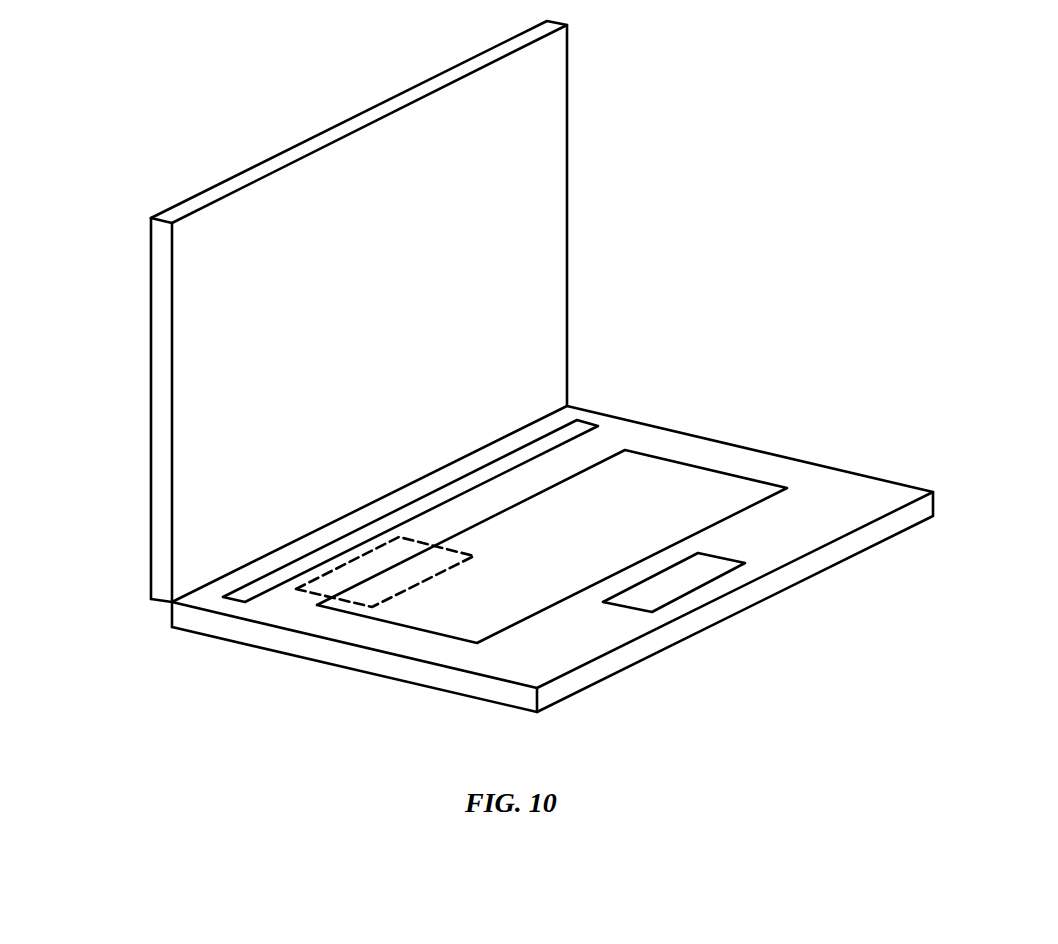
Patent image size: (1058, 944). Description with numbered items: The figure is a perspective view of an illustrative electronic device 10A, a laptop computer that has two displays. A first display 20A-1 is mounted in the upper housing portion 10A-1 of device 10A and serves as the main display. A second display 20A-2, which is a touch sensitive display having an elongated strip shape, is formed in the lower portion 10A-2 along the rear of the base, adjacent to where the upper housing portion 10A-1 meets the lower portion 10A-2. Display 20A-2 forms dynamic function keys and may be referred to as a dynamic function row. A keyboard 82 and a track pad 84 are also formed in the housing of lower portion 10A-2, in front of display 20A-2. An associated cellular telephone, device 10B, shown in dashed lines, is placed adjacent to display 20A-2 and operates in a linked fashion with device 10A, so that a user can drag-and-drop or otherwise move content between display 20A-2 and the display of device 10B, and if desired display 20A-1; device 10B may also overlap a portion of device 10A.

The electronic device 10A is at (485, 366).
The upper housing portion 10A-1 is at (359, 324).
The lower portion 10A-2 is at (534, 549).
The display 20A-1 is at (552, 287).
The display 20A-2 is at (245, 600).
The keyboard 82 is at (697, 467).
The track pad 84 is at (735, 556).
The device 10B is at (303, 592).